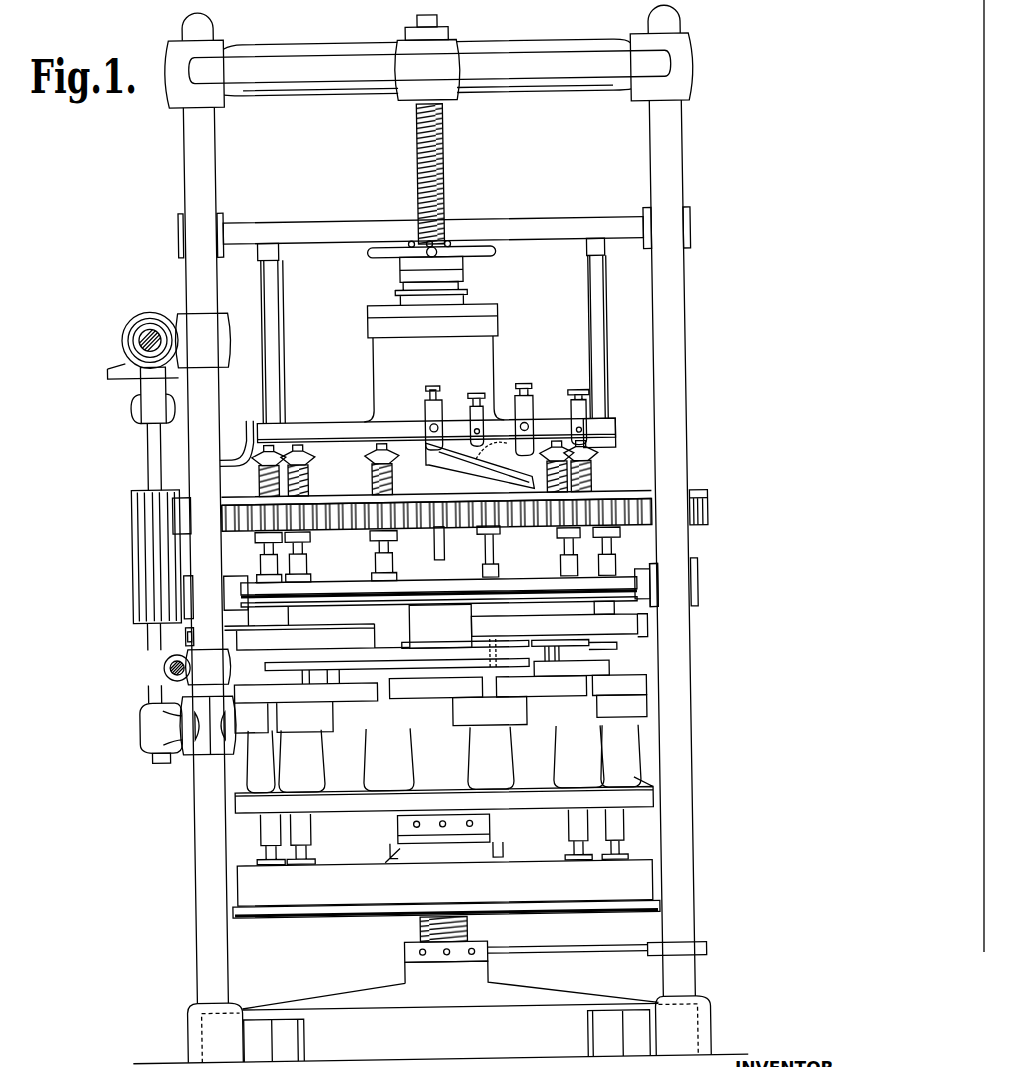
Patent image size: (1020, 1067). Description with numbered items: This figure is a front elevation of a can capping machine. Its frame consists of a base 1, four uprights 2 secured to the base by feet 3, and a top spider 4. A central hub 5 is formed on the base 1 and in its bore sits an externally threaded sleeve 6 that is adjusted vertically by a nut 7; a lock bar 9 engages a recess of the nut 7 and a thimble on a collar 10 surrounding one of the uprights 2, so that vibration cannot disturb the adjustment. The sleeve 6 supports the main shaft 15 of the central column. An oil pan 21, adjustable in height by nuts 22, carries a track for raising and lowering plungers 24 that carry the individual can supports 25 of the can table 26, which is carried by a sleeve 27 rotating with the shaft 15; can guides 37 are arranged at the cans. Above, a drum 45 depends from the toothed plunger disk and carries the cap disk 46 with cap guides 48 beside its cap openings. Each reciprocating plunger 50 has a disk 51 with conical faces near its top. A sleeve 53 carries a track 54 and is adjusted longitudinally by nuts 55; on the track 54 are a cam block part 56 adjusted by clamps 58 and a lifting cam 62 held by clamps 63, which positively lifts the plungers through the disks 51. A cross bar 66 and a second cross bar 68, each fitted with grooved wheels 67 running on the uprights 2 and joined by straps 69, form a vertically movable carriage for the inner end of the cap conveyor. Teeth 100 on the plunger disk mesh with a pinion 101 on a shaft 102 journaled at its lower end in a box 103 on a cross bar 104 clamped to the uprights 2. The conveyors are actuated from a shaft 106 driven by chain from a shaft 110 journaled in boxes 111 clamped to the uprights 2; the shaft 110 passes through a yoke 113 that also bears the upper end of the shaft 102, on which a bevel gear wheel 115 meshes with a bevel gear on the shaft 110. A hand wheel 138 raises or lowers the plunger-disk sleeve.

The base 1 is at (441, 1033).
The uprights 2 is at (439, 504).
The feet 3 is at (449, 1029).
The top spider 4 is at (538, 62).
The central hub 5 is at (450, 983).
The externally threaded sleeve 6 is at (412, 927).
The nut 7 is at (400, 950).
The lock bar 9 is at (552, 950).
The collar 10 is at (680, 951).
The main shaft 15 is at (422, 185).
The oil pan 21 is at (446, 888).
The nuts 22 is at (490, 826).
The plungers 24 is at (378, 824).
The can supports 25 is at (306, 708).
The can table 26 is at (443, 689).
The sleeve 27 is at (440, 626).
The can guides 37 is at (486, 658).
The drum 45 is at (484, 551).
The cap disk 46 is at (485, 600).
The cap guides 48 is at (422, 583).
The reciprocating plunger 50 is at (302, 567).
The disk 51 is at (370, 463).
The sleeve 53 is at (433, 379).
The track 54 is at (355, 437).
The nuts 55 is at (372, 322).
The cam block part 56 is at (612, 442).
The clamps 58 is at (570, 405).
The lifting cam 62 is at (465, 467).
The clamps 63 is at (430, 422).
The cross bar 66 is at (440, 645).
The grooved wheels 67 is at (182, 244).
The second cross bar 68 is at (433, 231).
The straps 69 is at (276, 328).
The teeth 100 is at (709, 514).
The pinion 101 is at (132, 516).
The shaft 102 is at (148, 449).
The box 103 is at (148, 725).
The cross bar 104 is at (196, 746).
The shaft 106 is at (168, 670).
The shaft 110 is at (153, 330).
The boxes 111 is at (203, 340).
The yoke 113 is at (152, 379).
The bevel gear wheel 115 is at (108, 369).
The hand wheel 138 is at (378, 262).